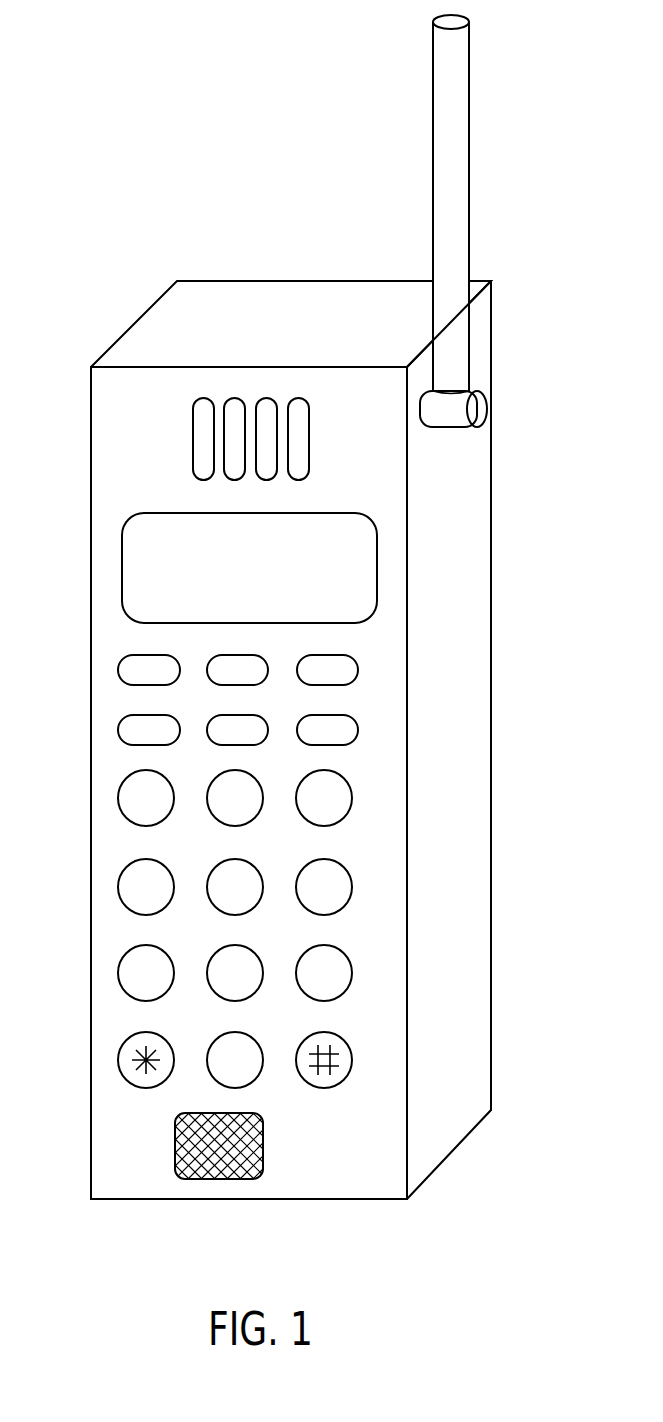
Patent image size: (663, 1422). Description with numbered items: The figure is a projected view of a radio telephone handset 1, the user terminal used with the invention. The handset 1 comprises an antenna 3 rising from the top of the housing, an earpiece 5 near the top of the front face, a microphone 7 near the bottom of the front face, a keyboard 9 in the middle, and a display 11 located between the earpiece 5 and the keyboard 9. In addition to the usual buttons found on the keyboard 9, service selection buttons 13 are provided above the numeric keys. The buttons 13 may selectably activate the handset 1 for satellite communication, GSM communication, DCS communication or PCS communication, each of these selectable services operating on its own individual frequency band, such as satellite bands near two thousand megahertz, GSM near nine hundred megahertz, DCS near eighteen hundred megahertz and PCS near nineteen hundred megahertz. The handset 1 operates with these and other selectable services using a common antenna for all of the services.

The radio telephone handset 1 is at (473, 1087).
The antenna 3 is at (453, 177).
The earpiece 5 is at (235, 462).
The microphone 7 is at (212, 1163).
The keyboard 9 is at (365, 1073).
The display 11 is at (142, 590).
The service selection buttons 13 is at (157, 653).